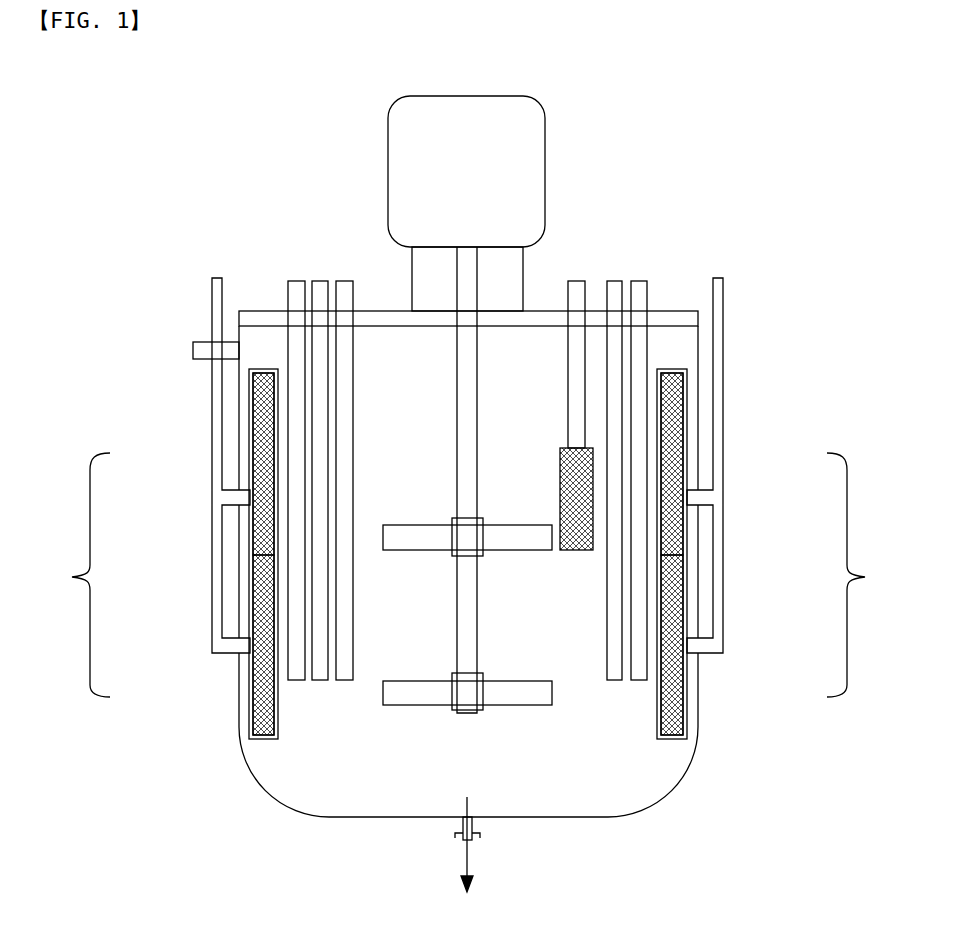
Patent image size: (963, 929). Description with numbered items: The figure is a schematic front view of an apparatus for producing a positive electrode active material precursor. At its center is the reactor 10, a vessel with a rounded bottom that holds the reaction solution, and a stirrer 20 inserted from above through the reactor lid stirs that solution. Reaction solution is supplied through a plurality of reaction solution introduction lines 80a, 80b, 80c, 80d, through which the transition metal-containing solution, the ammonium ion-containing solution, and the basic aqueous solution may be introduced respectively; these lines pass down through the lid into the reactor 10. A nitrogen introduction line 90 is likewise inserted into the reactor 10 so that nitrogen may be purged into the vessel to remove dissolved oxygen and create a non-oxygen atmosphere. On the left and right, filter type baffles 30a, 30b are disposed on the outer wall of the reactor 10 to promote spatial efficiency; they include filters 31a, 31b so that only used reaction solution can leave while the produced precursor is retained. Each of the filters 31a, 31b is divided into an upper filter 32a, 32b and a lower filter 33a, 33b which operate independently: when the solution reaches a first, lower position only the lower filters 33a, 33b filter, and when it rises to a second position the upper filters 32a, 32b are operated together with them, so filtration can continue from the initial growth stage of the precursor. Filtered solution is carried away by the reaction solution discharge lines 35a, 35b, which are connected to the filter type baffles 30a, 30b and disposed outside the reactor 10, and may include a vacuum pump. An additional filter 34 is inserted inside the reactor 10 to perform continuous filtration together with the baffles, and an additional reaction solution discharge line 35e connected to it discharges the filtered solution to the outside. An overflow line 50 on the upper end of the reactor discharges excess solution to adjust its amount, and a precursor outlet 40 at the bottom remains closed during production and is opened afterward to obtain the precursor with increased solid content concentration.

The reactor 10 is at (335, 817).
The stirrer 20 is at (515, 705).
The filter type baffle 30a is at (249, 393).
The filter type baffle 30b is at (688, 392).
The filter 31a is at (67, 575).
The filter 31b is at (870, 575).
The upper filter 32a is at (262, 455).
The upper filter 32b is at (676, 450).
The lower filter 33a is at (262, 698).
The lower filter 33b is at (673, 701).
The additional filter 34 is at (560, 480).
The reaction solution discharge line 35a is at (212, 296).
The reaction solution discharge line 35b is at (723, 350).
The additional reaction solution discharge line 35e is at (585, 372).
The precursor outlet 40 is at (467, 862).
The overflow line 50 is at (193, 348).
The reaction solution introduction line 80a is at (638, 281).
The reaction solution introduction line 80b is at (614, 281).
The reaction solution introduction line 80c is at (318, 281).
The reaction solution introduction line 80d is at (295, 281).
The nitrogen introduction line 90 is at (344, 281).